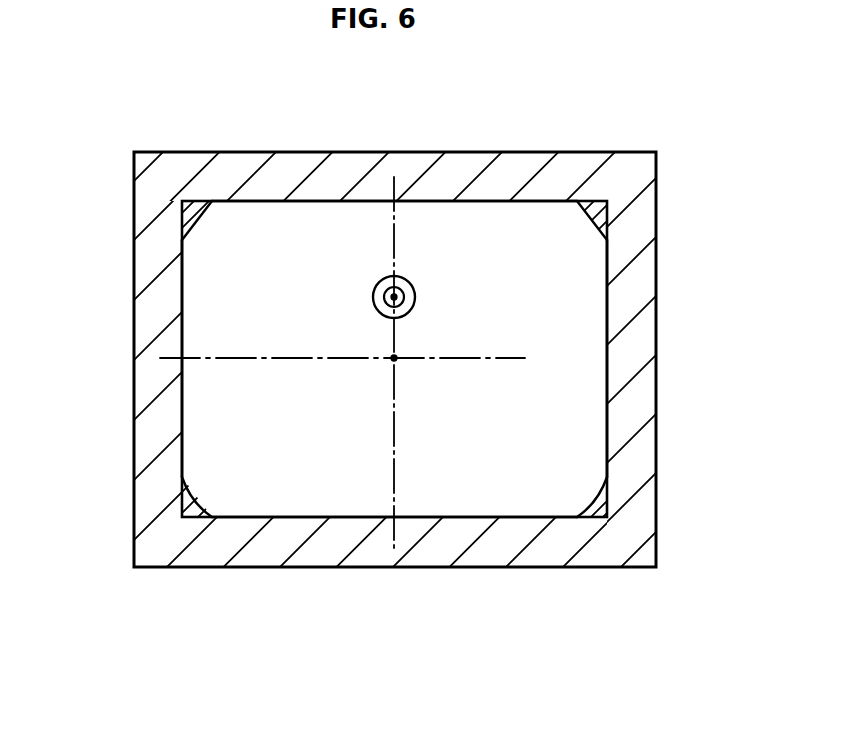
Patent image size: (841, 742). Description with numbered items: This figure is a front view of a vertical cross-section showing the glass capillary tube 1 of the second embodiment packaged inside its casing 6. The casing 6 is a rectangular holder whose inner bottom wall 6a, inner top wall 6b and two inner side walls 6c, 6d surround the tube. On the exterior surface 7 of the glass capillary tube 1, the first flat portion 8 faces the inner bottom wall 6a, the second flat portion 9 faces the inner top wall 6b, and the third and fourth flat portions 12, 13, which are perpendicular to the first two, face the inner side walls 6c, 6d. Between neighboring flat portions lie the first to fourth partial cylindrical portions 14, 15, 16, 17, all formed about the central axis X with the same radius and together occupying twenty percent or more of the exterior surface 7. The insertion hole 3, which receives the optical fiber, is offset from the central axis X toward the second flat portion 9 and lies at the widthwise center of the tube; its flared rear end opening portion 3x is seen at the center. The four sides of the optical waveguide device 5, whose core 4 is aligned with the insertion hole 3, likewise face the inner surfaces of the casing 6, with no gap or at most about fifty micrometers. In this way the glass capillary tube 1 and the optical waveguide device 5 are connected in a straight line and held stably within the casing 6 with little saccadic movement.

The glass capillary tube 1 is at (552, 334).
The insertion hole 3 is at (374, 297).
The rear end opening portion 3x is at (415, 298).
The core 4 is at (409, 284).
The optical waveguide device 5 is at (597, 210).
The casing 6 is at (420, 386).
The inner bottom wall 6a is at (368, 552).
The inner top wall 6b is at (353, 168).
The inner side wall 6c is at (147, 432).
The inner side wall 6d is at (645, 386).
The exterior surface 7 is at (180, 498).
The first flat portion 8 is at (480, 520).
The second flat portion 9 is at (447, 200).
The third flat portion 12 is at (182, 338).
The fourth flat portion 13 is at (608, 430).
The first partial cylindrical portion 14 is at (187, 212).
The second partial cylindrical portion 15 is at (608, 232).
The third partial cylindrical portion 16 is at (606, 496).
The fourth partial cylindrical portion 17 is at (192, 490).
The central axis X is at (394, 358).